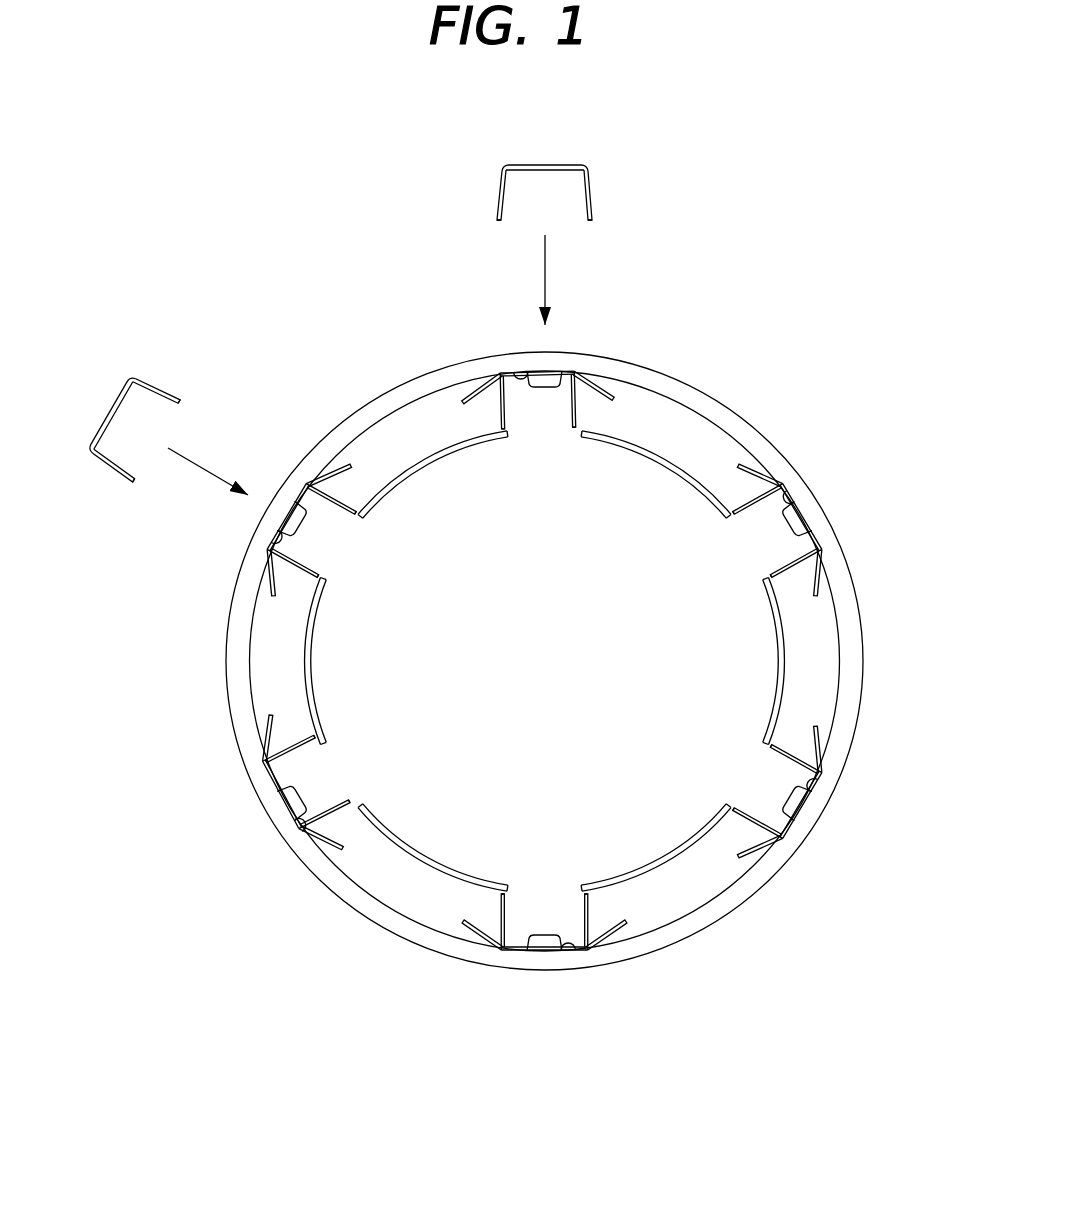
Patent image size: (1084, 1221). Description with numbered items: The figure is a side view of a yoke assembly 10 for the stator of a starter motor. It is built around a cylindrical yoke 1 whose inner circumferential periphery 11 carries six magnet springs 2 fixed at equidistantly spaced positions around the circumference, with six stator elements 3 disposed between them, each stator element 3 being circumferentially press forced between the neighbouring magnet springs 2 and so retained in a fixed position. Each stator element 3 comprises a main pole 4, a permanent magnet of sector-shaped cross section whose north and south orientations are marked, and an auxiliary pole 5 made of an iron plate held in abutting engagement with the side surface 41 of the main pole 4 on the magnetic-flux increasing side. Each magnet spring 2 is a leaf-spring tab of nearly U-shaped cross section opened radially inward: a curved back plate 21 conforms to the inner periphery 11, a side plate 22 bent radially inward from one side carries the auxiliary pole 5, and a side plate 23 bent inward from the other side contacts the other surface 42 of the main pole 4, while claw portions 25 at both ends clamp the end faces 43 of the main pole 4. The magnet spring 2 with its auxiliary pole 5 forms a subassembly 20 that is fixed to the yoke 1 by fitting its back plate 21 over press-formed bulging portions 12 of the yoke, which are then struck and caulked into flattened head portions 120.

The cylindrical yoke 1 is at (812, 483).
The yoke assembly 10 is at (763, 387).
The inner circumferential periphery 11 is at (835, 697).
The bulging portion 12 is at (543, 390).
The flattened head portion 120 is at (552, 395).
The magnet spring 2 is at (487, 582).
The magnet spring subassembly 20 is at (492, 582).
The back plate 21 is at (530, 372).
The side plate 22 is at (599, 372).
The side plate 23 is at (497, 378).
The claw portion 25 is at (622, 395).
The auxiliary pole 5 is at (573, 434).
The stator element 3 is at (536, 684).
The main pole 4 is at (653, 437).
The side surface 41 is at (490, 420).
The other surface 42 is at (512, 440).
The end face 43 is at (713, 433).